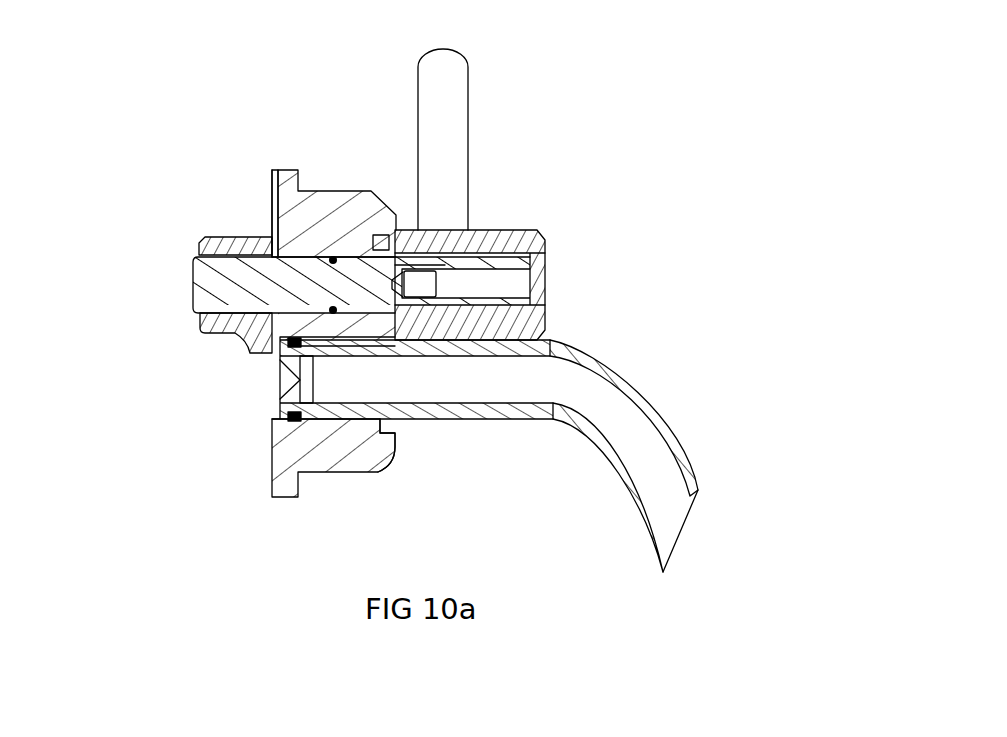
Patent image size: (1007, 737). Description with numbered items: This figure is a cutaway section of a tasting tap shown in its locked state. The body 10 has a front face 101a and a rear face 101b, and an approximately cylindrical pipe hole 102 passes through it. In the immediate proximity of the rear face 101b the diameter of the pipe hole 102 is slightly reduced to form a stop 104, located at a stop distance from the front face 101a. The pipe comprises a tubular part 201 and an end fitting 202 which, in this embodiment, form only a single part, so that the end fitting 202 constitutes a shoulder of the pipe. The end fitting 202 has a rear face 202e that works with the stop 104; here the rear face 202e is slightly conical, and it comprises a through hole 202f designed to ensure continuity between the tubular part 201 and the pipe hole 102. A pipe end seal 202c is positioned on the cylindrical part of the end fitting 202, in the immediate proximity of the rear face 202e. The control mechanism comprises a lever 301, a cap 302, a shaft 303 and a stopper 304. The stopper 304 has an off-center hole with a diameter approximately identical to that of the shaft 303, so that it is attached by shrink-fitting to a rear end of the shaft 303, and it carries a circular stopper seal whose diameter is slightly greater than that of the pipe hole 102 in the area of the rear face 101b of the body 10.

The body 10 is at (311, 217).
The front face 101a is at (397, 442).
The rear face 101b is at (272, 208).
The pipe hole 102 is at (342, 412).
The stop 104 is at (265, 358).
The tubular part 201 is at (578, 355).
The end fitting 202 is at (340, 412).
The pipe end seal 202c is at (278, 447).
The rear face 202e is at (277, 420).
The through hole 202f is at (277, 376).
The lever 301 is at (468, 85).
The cap 302 is at (513, 228).
The shaft 303 is at (218, 291).
The stopper 304 is at (199, 246).